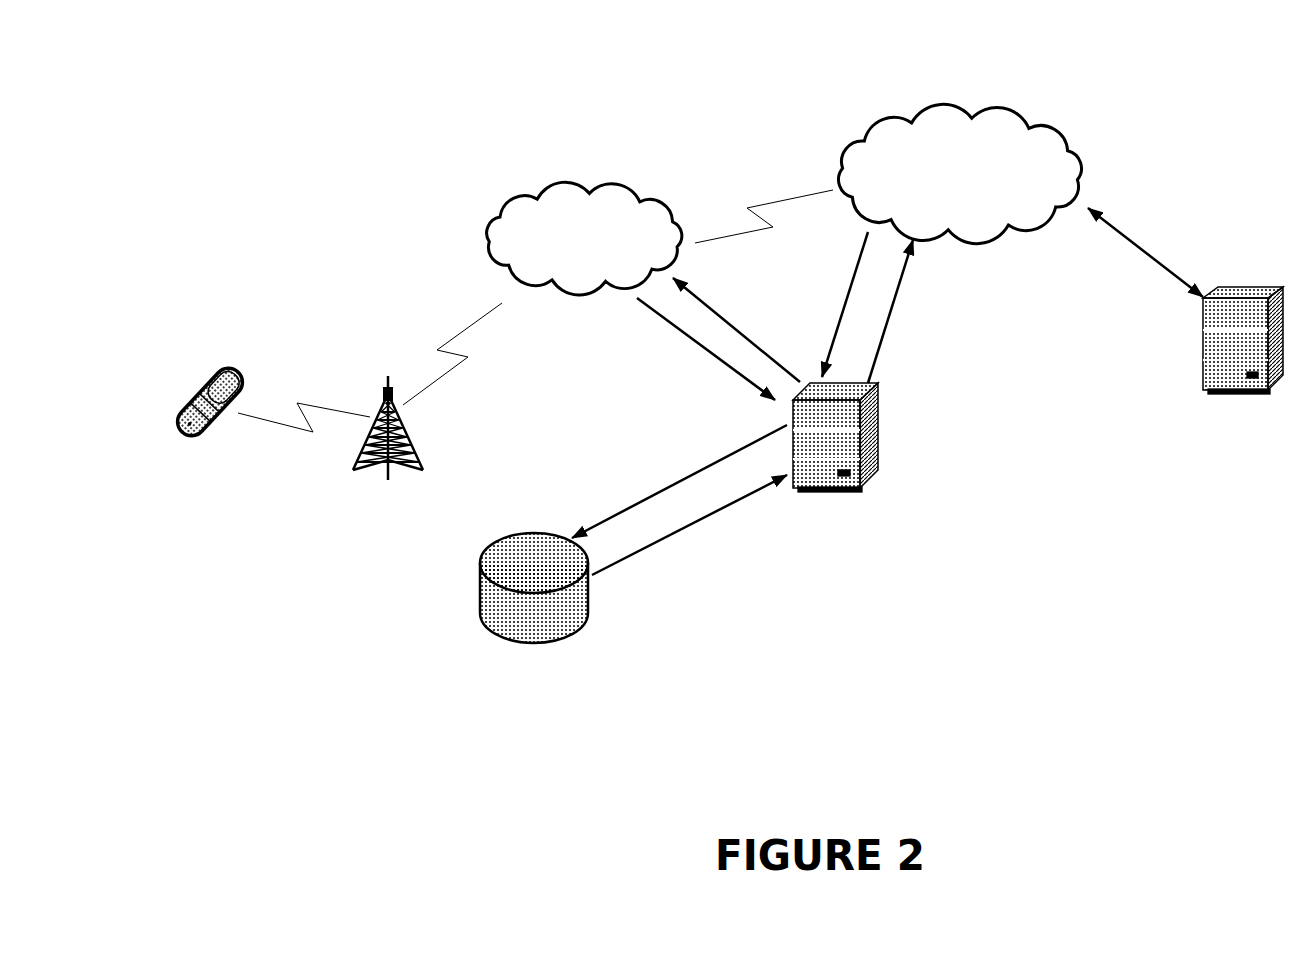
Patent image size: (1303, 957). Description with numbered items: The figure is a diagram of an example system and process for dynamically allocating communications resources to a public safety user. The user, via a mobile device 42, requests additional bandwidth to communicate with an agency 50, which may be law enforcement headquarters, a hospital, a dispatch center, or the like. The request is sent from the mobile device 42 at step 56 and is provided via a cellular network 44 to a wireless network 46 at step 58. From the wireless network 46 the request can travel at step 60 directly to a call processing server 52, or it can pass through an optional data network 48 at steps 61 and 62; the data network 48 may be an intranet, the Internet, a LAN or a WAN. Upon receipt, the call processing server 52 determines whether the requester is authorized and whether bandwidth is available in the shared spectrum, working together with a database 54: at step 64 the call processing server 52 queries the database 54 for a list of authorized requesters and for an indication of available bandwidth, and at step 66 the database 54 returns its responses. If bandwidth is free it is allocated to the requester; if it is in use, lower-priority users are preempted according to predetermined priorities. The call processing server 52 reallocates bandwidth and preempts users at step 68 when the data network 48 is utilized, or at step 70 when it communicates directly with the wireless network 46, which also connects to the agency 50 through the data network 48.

The mobile device 42 is at (188, 413).
The cellular network 44 is at (378, 472).
The wireless network 46 is at (597, 182).
The data network 48 is at (960, 105).
The agency 50 is at (1262, 287).
The call processing server 52 is at (880, 437).
The database 54 is at (545, 532).
The step of sending request via mobile device 56 is at (315, 403).
The step of providing request to wireless network 58 is at (465, 328).
The step of providing request directly to call processing server 60 is at (698, 345).
The step of providing request to data network 61 is at (765, 202).
The step of providing request from data network to call processing server 62 is at (833, 340).
The step of querying database 64 is at (648, 497).
The step of database response 66 is at (648, 545).
The step of reallocating bandwidth via data network 68 is at (880, 352).
The step of reallocating bandwidth directly to wireless network 70 is at (732, 323).